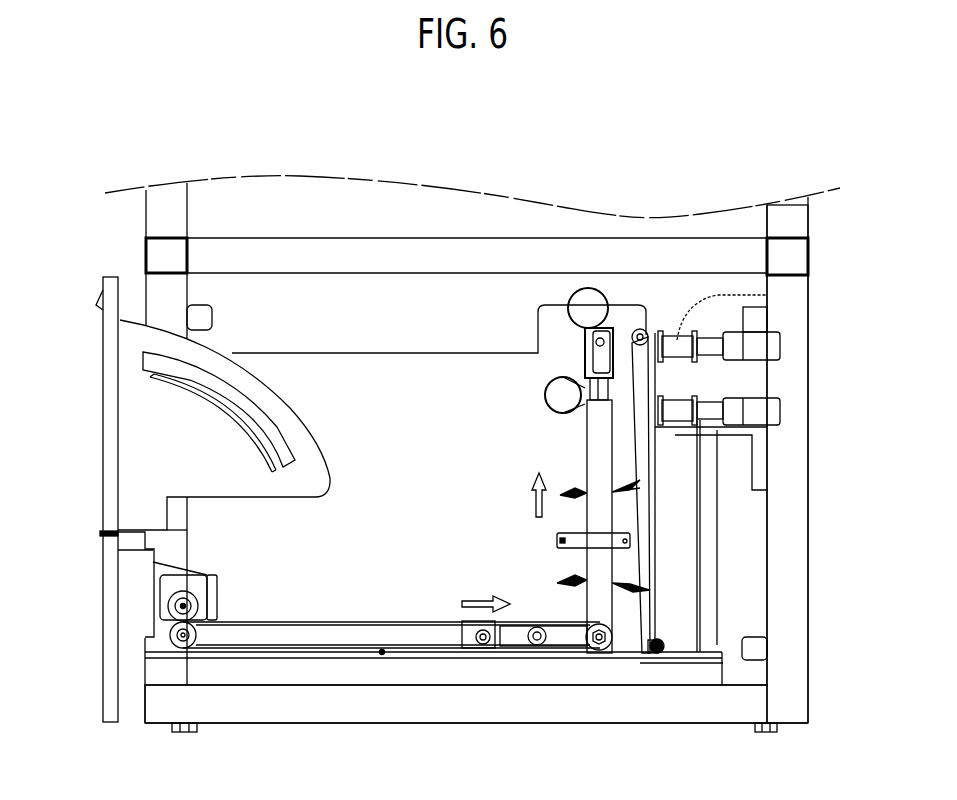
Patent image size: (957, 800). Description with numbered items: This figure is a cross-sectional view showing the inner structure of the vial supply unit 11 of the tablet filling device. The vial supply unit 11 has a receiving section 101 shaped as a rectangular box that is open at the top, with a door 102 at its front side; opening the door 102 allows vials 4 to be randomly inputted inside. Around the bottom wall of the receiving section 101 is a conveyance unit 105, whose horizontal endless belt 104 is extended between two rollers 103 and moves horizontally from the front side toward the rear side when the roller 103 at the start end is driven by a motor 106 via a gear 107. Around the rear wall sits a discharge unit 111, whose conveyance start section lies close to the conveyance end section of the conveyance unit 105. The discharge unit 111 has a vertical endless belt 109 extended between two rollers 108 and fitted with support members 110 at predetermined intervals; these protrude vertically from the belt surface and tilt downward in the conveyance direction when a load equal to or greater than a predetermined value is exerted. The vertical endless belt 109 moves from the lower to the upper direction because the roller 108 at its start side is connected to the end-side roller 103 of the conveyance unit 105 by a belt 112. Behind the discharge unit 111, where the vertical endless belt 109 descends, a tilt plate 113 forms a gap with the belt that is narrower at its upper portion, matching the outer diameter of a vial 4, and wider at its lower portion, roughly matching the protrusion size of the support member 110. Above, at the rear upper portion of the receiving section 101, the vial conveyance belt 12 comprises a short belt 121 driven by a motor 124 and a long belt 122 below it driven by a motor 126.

The vial supply unit 11 is at (108, 235).
The vial conveyance belt 12 is at (728, 488).
The vial 4 is at (545, 386).
The receiving section 101 is at (418, 449).
The door 102 is at (105, 458).
The roller 103 is at (170, 640).
The horizontal endless belt 104 is at (330, 622).
The conveyance unit 105 is at (382, 653).
The motor 106 is at (160, 578).
The gear 107 is at (165, 603).
The roller 108 is at (585, 340).
The vertical endless belt 109 is at (587, 455).
The support member 110 is at (565, 418).
The discharge unit 111 is at (645, 558).
The belt 112 is at (572, 650).
The tilt plate 113 is at (628, 345).
The short belt 121 is at (775, 297).
The long belt 122 is at (710, 372).
The motor 124 is at (777, 334).
The motor 126 is at (770, 432).